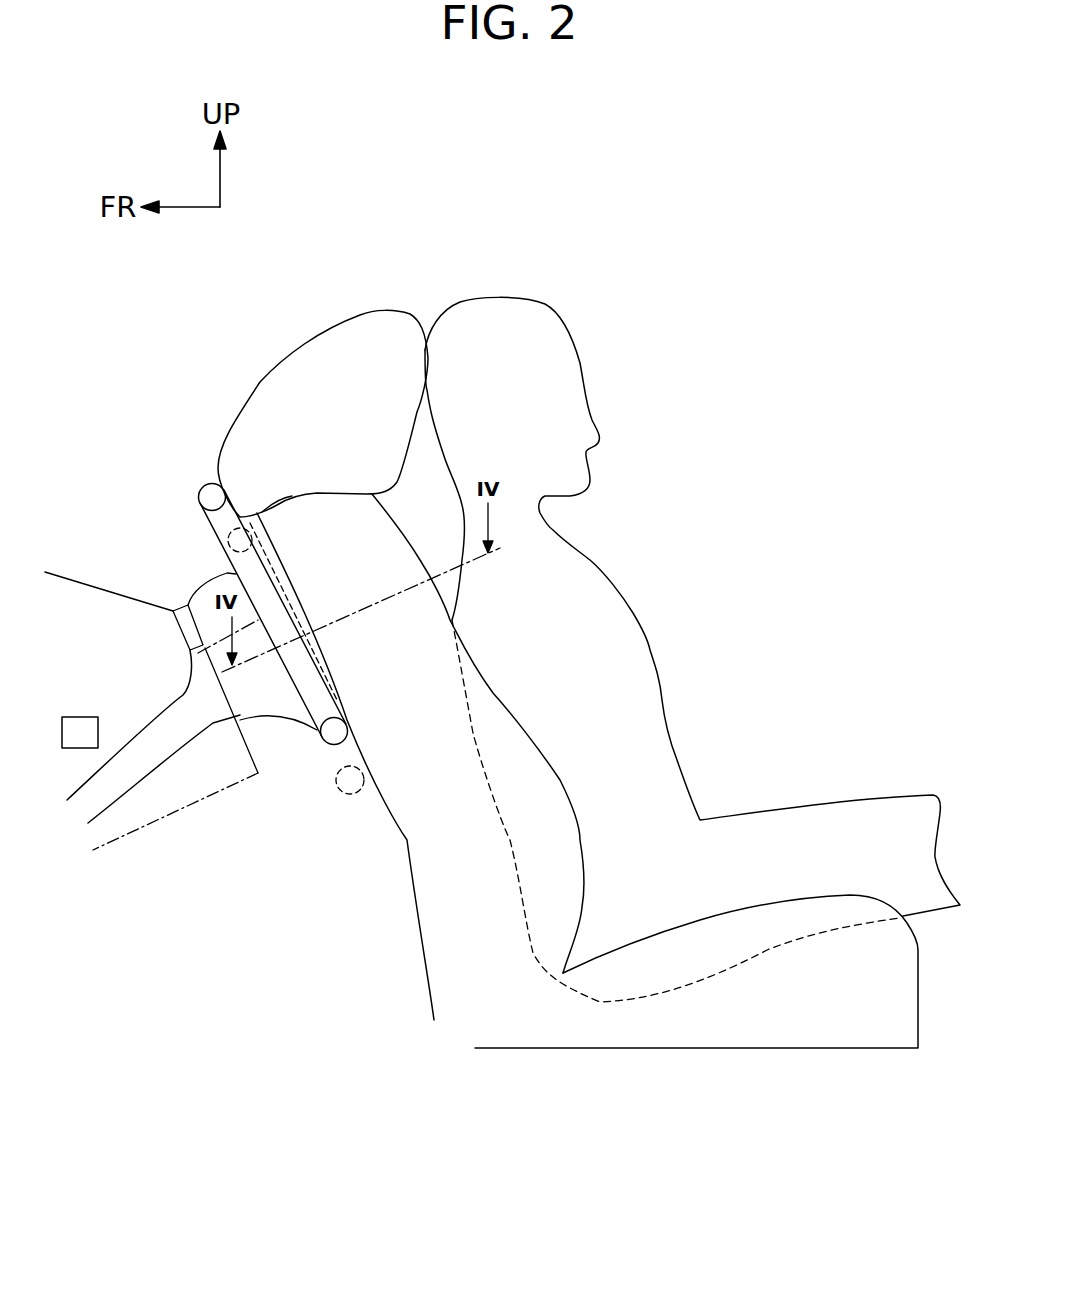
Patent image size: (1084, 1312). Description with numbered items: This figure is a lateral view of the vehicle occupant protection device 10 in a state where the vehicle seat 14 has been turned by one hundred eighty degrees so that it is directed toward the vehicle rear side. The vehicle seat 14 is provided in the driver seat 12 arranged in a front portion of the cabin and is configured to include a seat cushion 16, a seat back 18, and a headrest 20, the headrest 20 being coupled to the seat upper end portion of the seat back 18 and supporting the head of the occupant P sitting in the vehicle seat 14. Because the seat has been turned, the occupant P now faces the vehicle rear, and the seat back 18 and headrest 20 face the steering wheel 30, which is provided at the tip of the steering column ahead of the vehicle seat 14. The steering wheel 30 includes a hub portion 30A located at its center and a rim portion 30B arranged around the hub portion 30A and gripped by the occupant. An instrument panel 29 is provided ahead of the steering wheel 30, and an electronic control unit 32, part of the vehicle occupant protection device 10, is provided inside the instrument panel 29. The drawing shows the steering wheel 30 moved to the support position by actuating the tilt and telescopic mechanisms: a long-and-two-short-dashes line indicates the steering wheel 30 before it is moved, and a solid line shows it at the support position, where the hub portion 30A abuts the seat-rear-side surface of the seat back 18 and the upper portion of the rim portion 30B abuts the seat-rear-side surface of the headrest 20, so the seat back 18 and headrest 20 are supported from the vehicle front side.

The vehicle occupant protection device 10 is at (100, 462).
The driver seat 12 is at (350, 278).
The vehicle seat 14 is at (295, 345).
The seat cushion 16 is at (715, 1050).
The seat back 18 is at (540, 746).
The headrest 20 is at (247, 402).
The instrument panel 29 is at (100, 588).
The steering wheel 30 is at (203, 480).
The hub portion 30A is at (298, 632).
The rim portion 30B is at (197, 505).
The electronic control unit (ECU) 32 is at (79, 749).
The occupant P is at (492, 290).